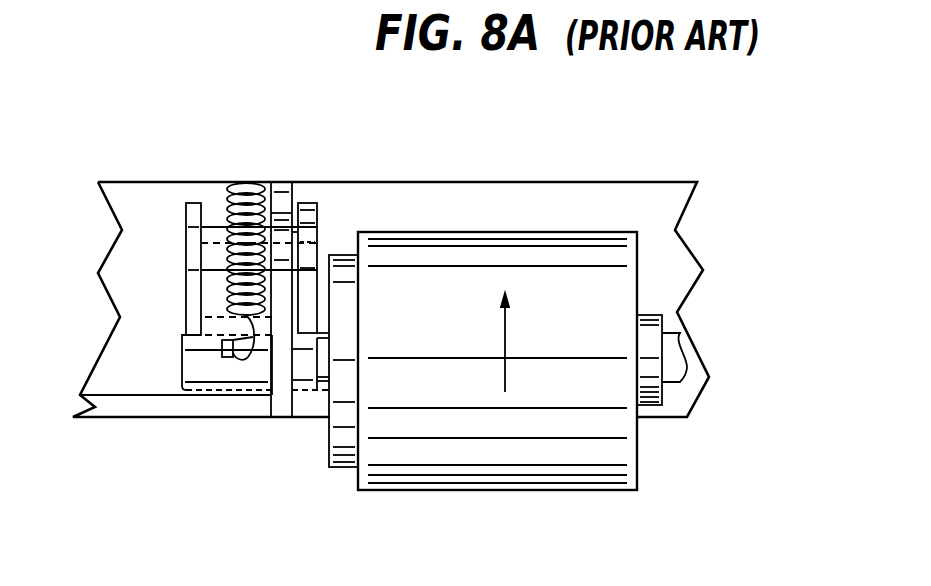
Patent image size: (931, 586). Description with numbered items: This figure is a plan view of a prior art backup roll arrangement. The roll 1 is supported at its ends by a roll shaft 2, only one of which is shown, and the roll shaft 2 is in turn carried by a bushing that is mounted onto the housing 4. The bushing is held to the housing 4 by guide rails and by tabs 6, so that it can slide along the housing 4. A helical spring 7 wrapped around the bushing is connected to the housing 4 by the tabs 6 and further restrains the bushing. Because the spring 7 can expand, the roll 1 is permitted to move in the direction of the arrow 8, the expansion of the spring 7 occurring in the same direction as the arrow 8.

The roll 1 is at (573, 480).
The roll shaft 2 is at (667, 380).
The housing 4 is at (637, 183).
The tabs 6 is at (228, 355).
The helical spring 7 is at (228, 192).
The arrow 8 is at (505, 337).